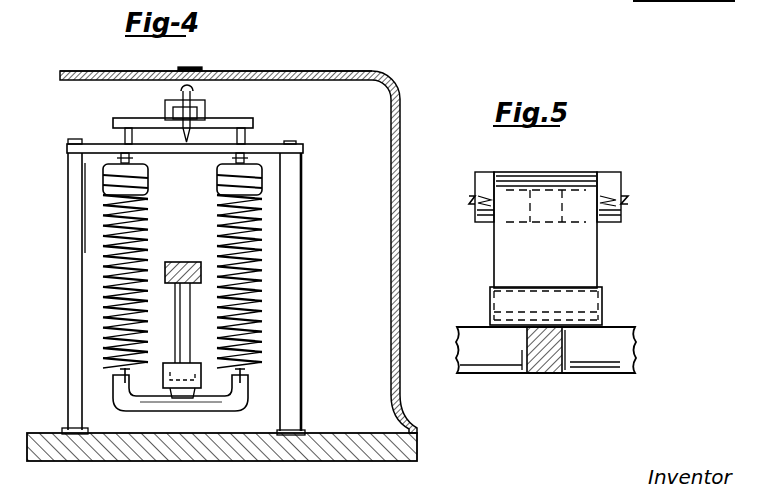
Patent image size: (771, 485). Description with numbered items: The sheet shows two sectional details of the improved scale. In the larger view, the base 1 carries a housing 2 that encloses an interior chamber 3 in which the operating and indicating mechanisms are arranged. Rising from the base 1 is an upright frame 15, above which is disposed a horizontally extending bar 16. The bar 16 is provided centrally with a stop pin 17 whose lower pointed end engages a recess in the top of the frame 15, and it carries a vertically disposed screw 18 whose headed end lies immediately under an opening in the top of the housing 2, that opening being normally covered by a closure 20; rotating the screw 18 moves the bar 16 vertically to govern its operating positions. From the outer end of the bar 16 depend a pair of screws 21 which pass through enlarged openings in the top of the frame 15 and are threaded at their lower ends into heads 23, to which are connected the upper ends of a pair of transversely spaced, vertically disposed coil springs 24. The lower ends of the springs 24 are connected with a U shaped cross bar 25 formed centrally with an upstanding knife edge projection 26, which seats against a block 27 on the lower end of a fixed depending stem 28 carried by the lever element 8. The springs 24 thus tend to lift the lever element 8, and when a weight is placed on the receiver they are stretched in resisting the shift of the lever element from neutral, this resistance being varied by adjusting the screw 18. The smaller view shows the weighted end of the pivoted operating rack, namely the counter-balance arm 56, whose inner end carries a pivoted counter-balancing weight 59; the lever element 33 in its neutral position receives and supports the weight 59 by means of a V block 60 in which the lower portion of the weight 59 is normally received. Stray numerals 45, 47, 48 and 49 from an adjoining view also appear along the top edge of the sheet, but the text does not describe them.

In FIG. 4, the base 1 is at (419, 445).
In FIG. 4, the housing 2 is at (402, 178).
In FIG. 4, the interior chamber 3 is at (357, 239).
In FIG. 4, the lever element 8 is at (185, 260).
In FIG. 4, the upright frame 15 is at (292, 192).
In FIG. 4, the horizontally extending bar 16 is at (269, 152).
In FIG. 4, the stop pin 17 is at (208, 125).
In FIG. 4, the vertically disposed screw 18 is at (233, 72).
In FIG. 4, the closure 20 is at (194, 70).
In FIG. 4, the depending screws 21 is at (124, 136).
In FIG. 4, the heads 23 is at (112, 173).
In FIG. 4, the coil springs 24 is at (108, 257).
In FIG. 4, the U shaped cross bar 25 is at (236, 397).
In FIG. 4, the knife edge projection 26 is at (179, 392).
In FIG. 4, the block 27 is at (188, 366).
In FIG. 4, the depending stem 28 is at (178, 302).
In FIG. 5, the lever element 33 is at (637, 351).
In FIG. 4, the element 45 is at (254, 12).
In FIG. 4, the element 47 is at (422, 6).
In FIG. 4, the element 48 is at (345, 0).
In FIG. 4, the element 49 is at (457, 0).
In FIG. 5, the counter-balance arm 56 is at (622, 179).
In FIG. 5, the counter-balancing weight 59 is at (573, 262).
In FIG. 5, the V block 60 is at (604, 305).